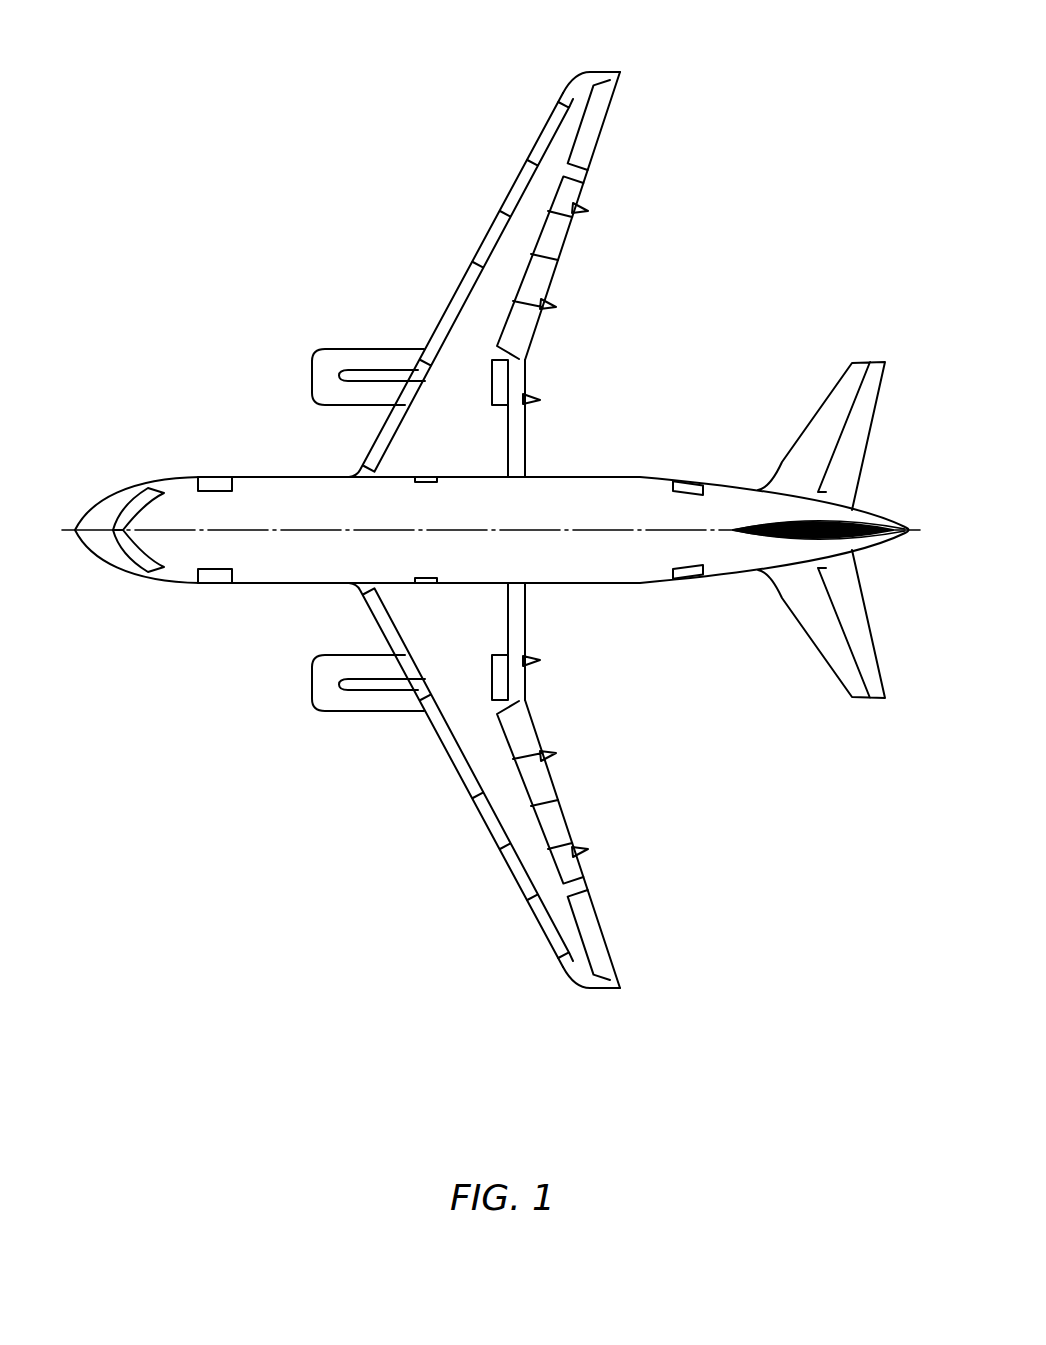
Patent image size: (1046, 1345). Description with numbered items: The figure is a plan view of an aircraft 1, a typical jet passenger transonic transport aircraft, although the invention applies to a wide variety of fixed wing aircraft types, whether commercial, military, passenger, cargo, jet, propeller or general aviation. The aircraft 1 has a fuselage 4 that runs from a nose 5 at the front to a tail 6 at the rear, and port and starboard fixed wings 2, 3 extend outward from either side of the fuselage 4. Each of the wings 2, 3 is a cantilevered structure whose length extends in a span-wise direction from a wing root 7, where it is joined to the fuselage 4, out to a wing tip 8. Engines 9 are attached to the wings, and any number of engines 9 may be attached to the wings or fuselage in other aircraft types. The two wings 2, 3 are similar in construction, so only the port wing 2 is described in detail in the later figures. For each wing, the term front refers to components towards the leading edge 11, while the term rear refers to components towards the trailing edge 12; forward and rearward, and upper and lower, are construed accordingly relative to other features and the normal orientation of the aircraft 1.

The aircraft 1 is at (241, 849).
The port fixed wing 2 is at (510, 790).
The starboard fixed wing 3 is at (530, 214).
The fuselage 4 is at (292, 495).
The nose 5 is at (80, 532).
The tail 6 is at (908, 534).
The wing root 7 is at (478, 475).
The wing tip 8 is at (602, 71).
The engine 9 is at (330, 368).
The leading edge 11 is at (455, 296).
The trailing edge 12 is at (553, 281).